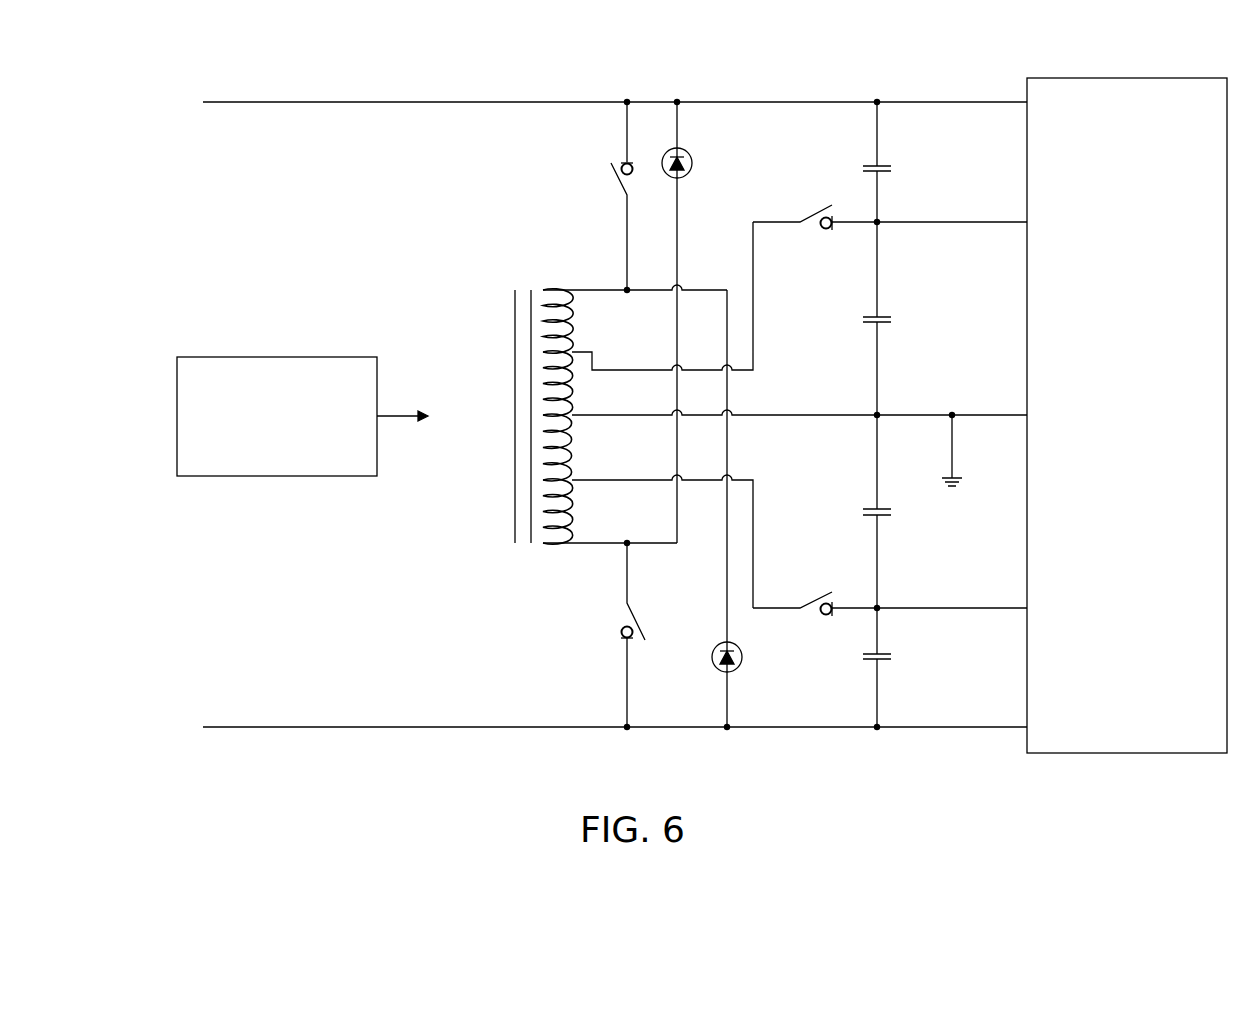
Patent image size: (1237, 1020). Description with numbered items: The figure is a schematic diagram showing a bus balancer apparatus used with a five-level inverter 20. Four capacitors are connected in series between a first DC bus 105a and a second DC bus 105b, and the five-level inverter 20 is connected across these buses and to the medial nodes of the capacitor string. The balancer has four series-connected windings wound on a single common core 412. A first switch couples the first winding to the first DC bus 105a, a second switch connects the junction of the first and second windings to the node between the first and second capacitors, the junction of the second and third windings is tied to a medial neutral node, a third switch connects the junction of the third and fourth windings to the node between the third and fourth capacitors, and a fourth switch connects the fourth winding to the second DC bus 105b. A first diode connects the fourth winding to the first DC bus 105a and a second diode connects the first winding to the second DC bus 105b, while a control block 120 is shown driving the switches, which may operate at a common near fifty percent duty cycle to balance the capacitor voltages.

The first DC bus 105a is at (338, 102).
The second DC bus 105b is at (295, 727).
The control 120 is at (277, 357).
The single common core 412 is at (515, 518).
The 5-level inverter 20 is at (1128, 78).